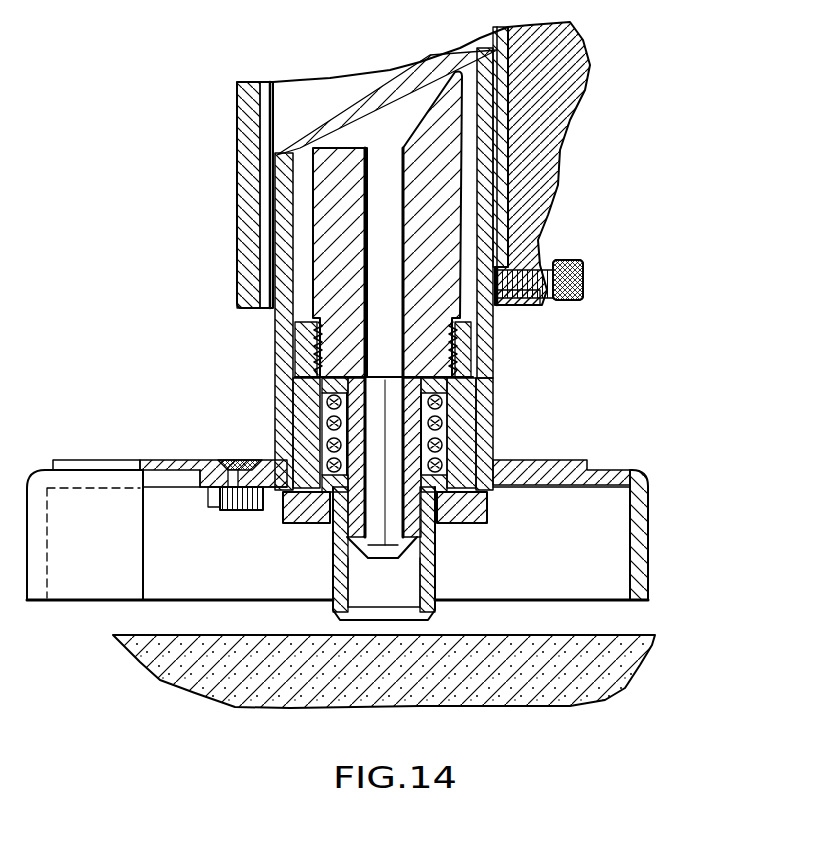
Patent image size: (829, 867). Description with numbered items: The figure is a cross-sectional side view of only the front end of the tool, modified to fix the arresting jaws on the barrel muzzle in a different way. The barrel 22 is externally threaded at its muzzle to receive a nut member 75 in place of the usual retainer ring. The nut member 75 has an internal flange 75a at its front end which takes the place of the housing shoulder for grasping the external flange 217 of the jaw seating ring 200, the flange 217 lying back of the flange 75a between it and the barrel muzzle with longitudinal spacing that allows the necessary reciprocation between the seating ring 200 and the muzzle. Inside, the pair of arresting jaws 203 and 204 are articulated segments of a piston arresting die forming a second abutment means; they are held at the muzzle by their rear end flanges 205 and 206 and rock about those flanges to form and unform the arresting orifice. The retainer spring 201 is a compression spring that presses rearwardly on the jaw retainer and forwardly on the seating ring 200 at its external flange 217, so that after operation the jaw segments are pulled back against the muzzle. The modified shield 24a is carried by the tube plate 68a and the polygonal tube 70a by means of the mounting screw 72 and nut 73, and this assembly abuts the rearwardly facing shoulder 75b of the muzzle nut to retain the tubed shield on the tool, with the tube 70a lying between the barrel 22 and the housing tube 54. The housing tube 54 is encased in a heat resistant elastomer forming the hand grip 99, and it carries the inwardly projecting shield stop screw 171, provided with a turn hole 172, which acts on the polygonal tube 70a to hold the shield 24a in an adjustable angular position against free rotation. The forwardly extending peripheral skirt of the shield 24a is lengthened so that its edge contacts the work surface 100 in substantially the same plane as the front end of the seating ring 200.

The hand grip 99 is at (580, 72).
The barrel 22 is at (438, 247).
The shield stop screw 171 is at (567, 257).
The turn hole 172 is at (583, 278).
The housing tube 54 is at (503, 305).
The rear end flange 206 is at (480, 372).
The nut member 75 is at (477, 403).
The arresting jaw 204 is at (475, 428).
The external flange 217 is at (480, 465).
The tube plate 68a is at (115, 462).
The modified shield 24a is at (648, 492).
The internal flange 75a is at (445, 507).
The jaw seating ring 200 is at (345, 567).
The work surface 100 is at (650, 648).
The tube 70a is at (283, 365).
The rear end flange 205 is at (303, 380).
The arresting jaw 203 is at (318, 408).
The retainer spring 201 is at (325, 423).
The mounting screw 72 is at (223, 463).
The rearwardly facing shoulder 75b is at (275, 480).
The nut 73 is at (213, 497).